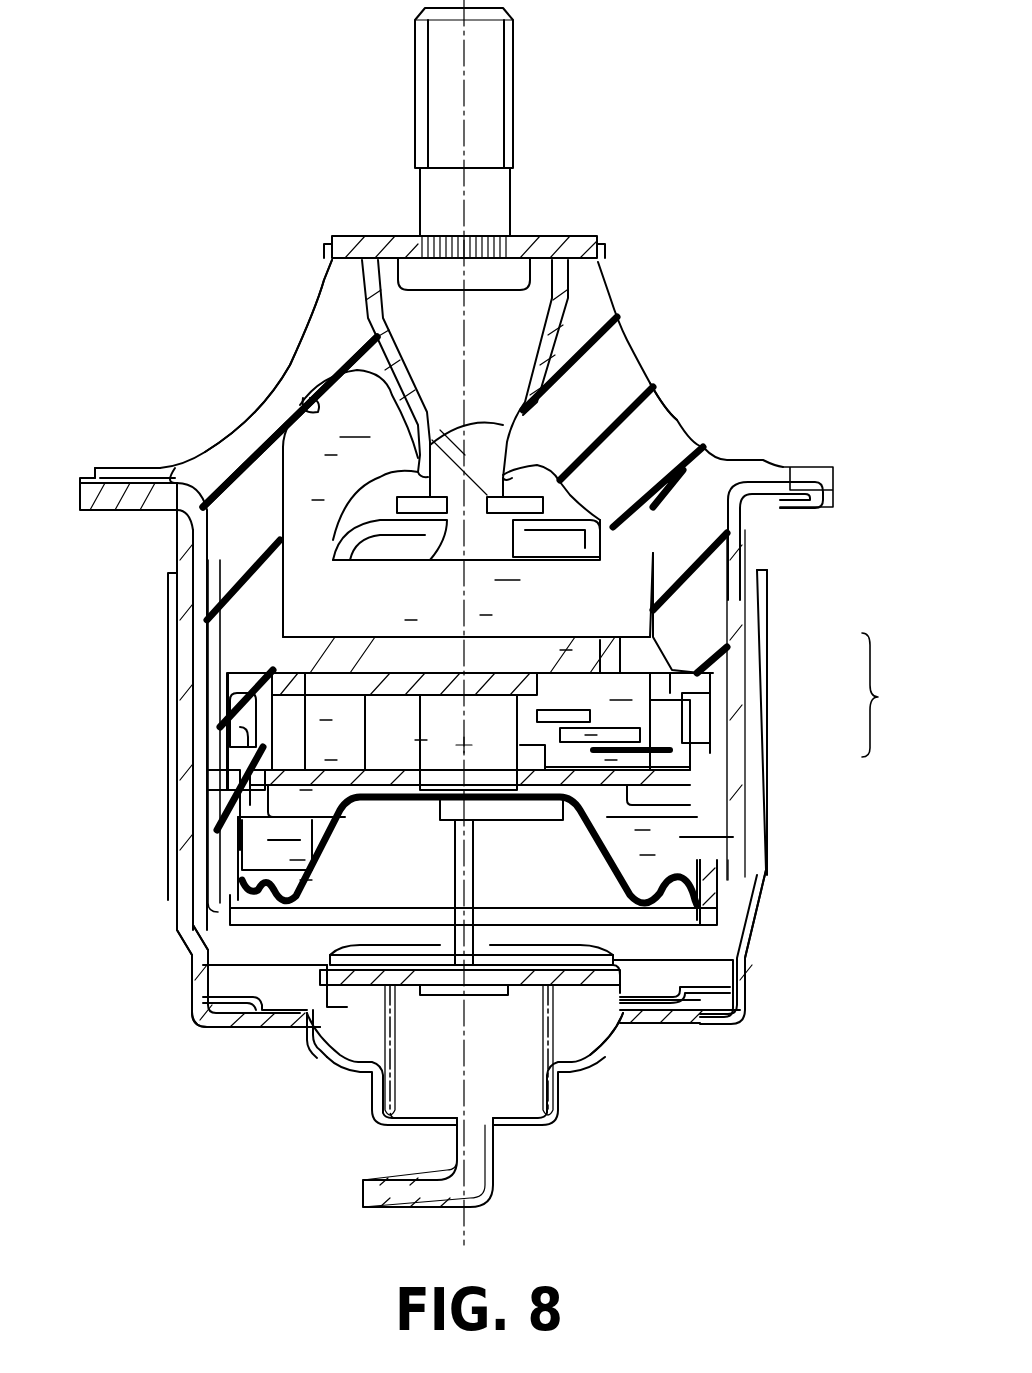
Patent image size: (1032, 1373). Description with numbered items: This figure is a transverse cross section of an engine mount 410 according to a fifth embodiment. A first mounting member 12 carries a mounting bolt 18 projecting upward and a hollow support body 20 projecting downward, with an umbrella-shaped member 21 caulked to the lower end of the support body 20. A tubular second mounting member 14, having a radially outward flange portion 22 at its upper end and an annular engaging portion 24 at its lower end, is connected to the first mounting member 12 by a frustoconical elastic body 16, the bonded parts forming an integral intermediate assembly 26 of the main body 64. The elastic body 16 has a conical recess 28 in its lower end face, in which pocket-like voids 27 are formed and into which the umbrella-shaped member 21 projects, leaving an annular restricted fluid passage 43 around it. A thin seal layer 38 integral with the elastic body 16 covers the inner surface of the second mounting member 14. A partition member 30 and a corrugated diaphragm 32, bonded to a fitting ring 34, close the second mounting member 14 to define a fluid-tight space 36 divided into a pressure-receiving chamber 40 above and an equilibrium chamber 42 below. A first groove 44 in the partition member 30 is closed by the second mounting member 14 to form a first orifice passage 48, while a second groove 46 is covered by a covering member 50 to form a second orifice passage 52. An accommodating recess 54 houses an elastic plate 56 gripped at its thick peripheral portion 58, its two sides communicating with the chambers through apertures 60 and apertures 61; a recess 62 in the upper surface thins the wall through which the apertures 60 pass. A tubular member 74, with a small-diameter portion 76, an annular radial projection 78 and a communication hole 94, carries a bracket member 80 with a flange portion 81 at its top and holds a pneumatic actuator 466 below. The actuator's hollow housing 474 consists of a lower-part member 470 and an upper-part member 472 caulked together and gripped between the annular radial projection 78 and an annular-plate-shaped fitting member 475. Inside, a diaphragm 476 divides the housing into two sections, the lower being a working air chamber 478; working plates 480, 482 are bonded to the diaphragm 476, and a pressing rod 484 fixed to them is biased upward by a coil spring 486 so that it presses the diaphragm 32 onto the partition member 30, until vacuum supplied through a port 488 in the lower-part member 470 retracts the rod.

The engine mount 410 is at (582, 115).
The mounting bolt 18 is at (432, 60).
The first mounting member 12 is at (372, 236).
The main body 64 is at (300, 318).
The support body 20 is at (543, 352).
The pocket-like voids 27 is at (302, 418).
The elastic body 16 is at (646, 430).
The conical recess 28 is at (650, 495).
The flange portion 22 is at (155, 490).
The flange portion 81 is at (115, 493).
The bracket member 80 is at (178, 540).
The annular restricted fluid passage 43 is at (733, 526).
The intermediate assembly 26 is at (752, 552).
The second mounting member 14 is at (740, 596).
The umbrella-shaped member 21 is at (385, 515).
The recess 62 is at (550, 735).
The apertures 60 is at (612, 757).
The pressure-receiving chamber 40 is at (648, 623).
The fluid-tight space 36 is at (886, 695).
The partition member 30 is at (440, 680).
The second orifice passage 52 is at (485, 703).
The second groove 46 is at (348, 710).
The covering member 50 is at (320, 775).
The accommodating recess 54 is at (573, 727).
The elastic plate 56 is at (600, 715).
The peripheral portion 58 is at (603, 752).
The equilibrium chamber 42 is at (700, 830).
The first orifice passage 48 is at (230, 700).
The first groove 44 is at (238, 740).
The seal layer 38 is at (215, 790).
The fitting ring 34 is at (232, 845).
The diaphragm 32 is at (705, 850).
The apertures 61 is at (695, 795).
The annular engaging portion 24 is at (713, 917).
The tubular member 74 is at (782, 882).
The communication hole 94 is at (195, 950).
The pressing rod 484 is at (455, 855).
The working plate 480 is at (505, 960).
The working plate 482 is at (440, 1000).
The diaphragm 476 is at (300, 972).
The upper-part member 472 is at (745, 995).
The small-diameter portion 76 is at (190, 1000).
The annular radial projection 78 is at (230, 1010).
The hollow housing 474 is at (310, 1045).
The annular-plate-shaped fitting member 475 is at (690, 975).
The lower-part member 470 is at (355, 1100).
The pneumatic actuator 466 is at (590, 1097).
The coil spring 486 is at (385, 1125).
The working air chamber 478 is at (505, 1100).
The port 488 is at (420, 1205).